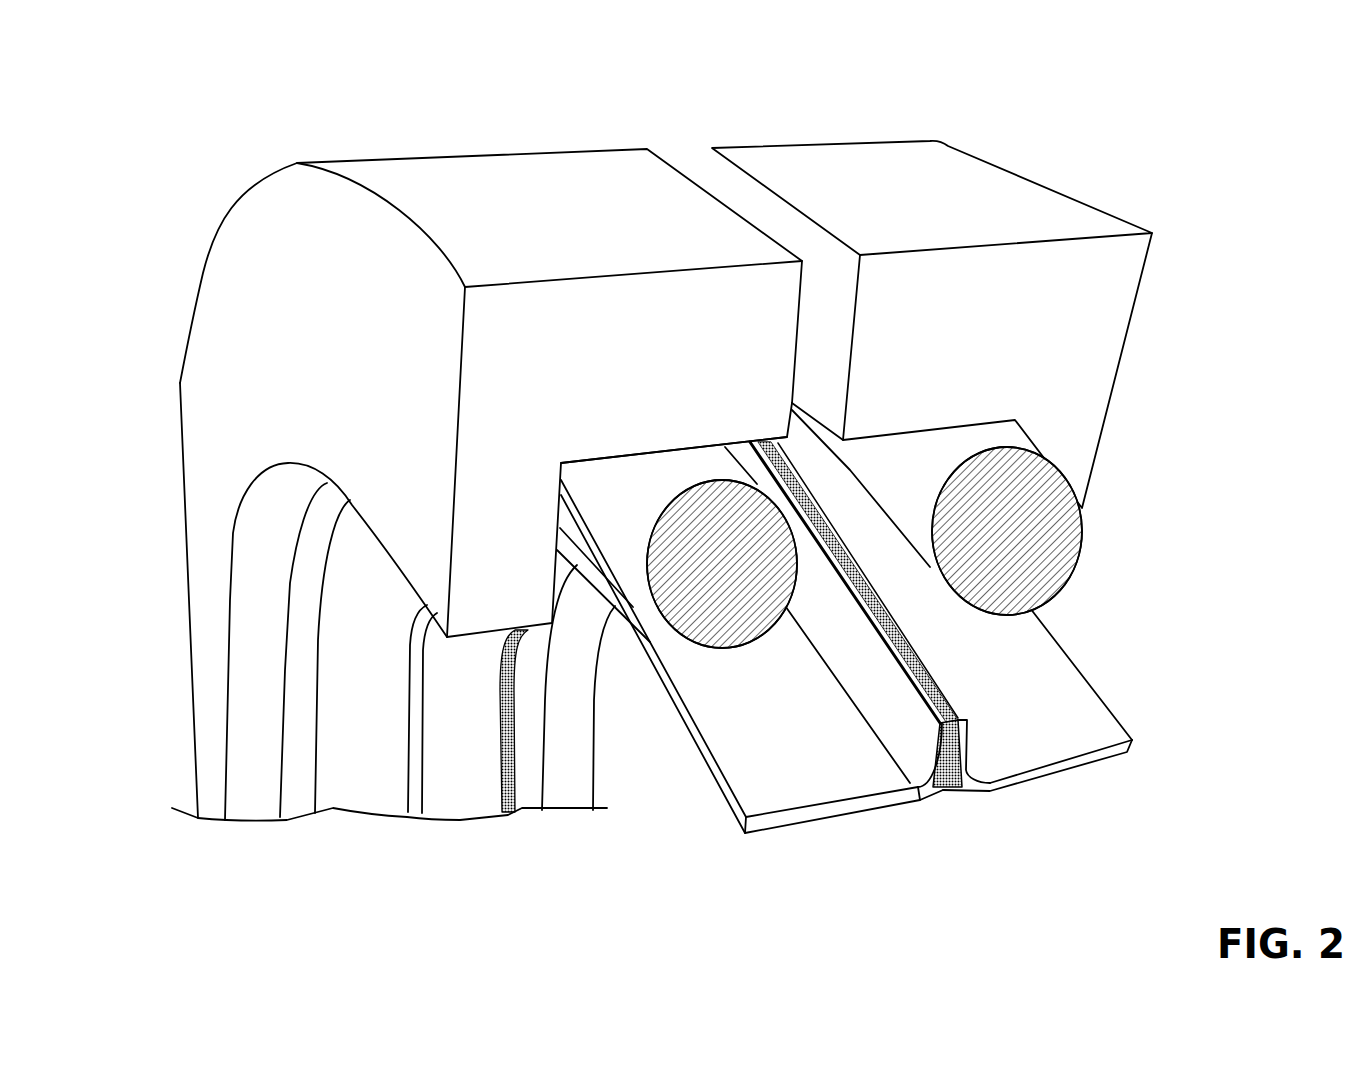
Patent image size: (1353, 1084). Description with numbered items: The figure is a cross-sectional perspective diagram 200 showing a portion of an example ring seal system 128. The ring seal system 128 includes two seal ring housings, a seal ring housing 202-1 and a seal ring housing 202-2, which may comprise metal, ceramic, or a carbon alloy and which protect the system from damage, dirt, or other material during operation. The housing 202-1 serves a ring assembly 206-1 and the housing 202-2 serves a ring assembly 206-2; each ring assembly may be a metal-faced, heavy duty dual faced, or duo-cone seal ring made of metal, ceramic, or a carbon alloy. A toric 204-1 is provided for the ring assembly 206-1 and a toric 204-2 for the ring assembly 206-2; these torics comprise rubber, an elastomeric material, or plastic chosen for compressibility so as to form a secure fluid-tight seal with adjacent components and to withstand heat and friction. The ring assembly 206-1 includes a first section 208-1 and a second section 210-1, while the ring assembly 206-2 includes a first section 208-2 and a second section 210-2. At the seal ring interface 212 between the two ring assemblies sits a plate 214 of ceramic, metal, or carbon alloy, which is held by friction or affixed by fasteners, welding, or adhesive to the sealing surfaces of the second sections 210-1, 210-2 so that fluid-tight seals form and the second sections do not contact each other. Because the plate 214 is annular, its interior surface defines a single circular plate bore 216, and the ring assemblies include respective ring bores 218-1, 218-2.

The ring seal system 128 is at (602, 487).
The cross-sectional perspective diagram 200 is at (165, 63).
The seal ring housing 202-1 is at (230, 237).
The seal ring housing 202-2 is at (848, 157).
The toric 204-1 is at (662, 476).
The toric 204-2 is at (972, 441).
The ring assembly 206-1 is at (819, 848).
The ring assembly 206-2 is at (1034, 798).
The first section 208-1 is at (727, 762).
The first section 208-2 is at (1052, 695).
The second section 210-1 is at (861, 693).
The second section 210-2 is at (928, 660).
The seal ring interface 212 is at (955, 808).
The plate 214 is at (967, 750).
The plate bore 216 is at (527, 740).
The ring bore 218-1 is at (336, 657).
The ring bore 218-2 is at (596, 689).